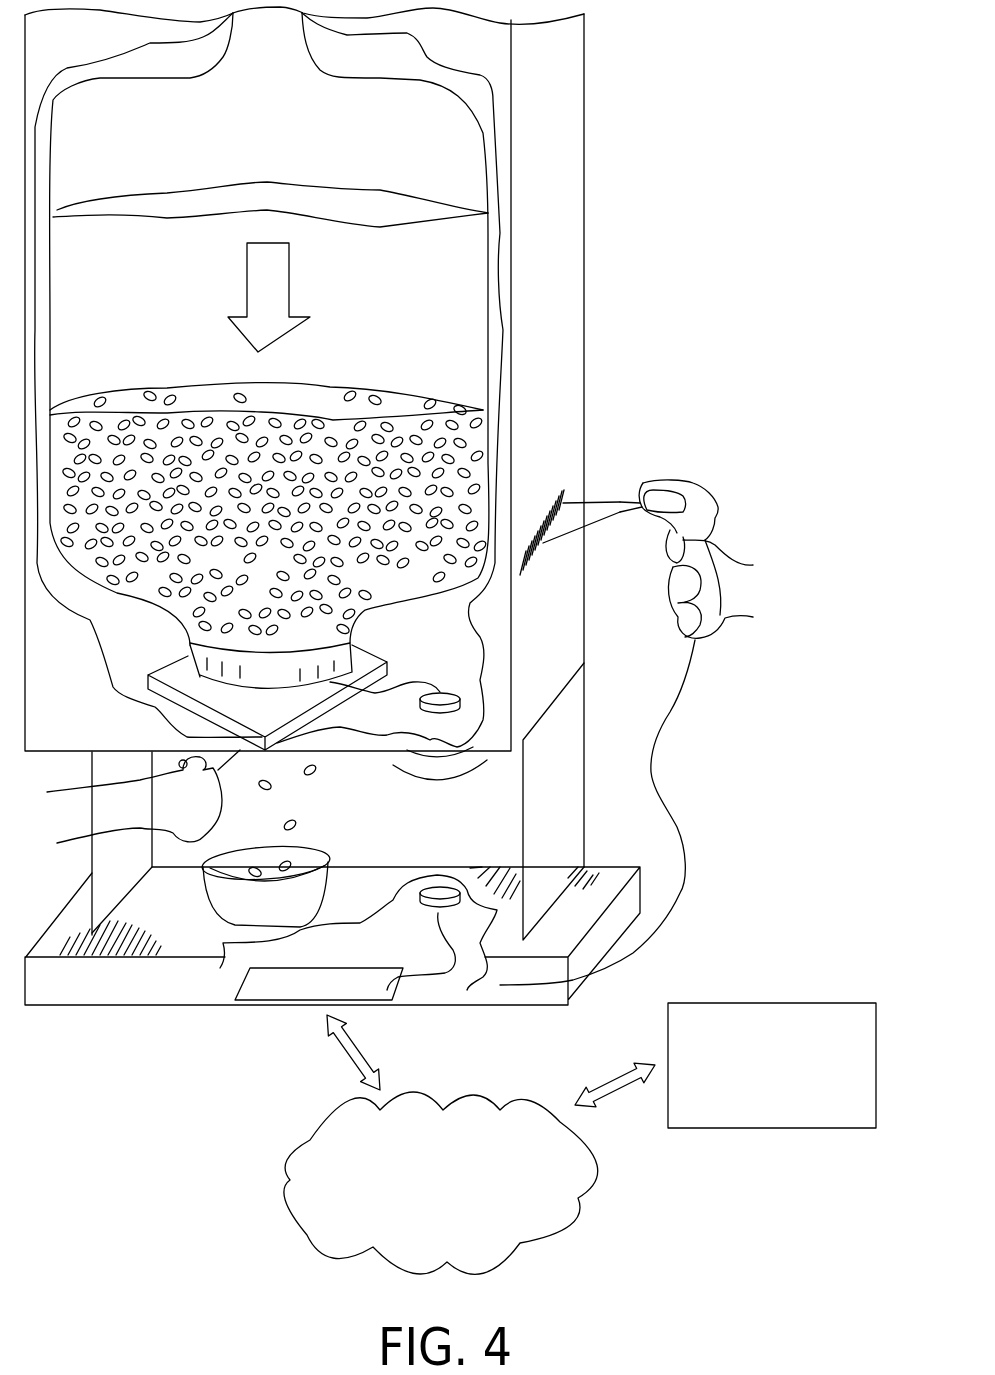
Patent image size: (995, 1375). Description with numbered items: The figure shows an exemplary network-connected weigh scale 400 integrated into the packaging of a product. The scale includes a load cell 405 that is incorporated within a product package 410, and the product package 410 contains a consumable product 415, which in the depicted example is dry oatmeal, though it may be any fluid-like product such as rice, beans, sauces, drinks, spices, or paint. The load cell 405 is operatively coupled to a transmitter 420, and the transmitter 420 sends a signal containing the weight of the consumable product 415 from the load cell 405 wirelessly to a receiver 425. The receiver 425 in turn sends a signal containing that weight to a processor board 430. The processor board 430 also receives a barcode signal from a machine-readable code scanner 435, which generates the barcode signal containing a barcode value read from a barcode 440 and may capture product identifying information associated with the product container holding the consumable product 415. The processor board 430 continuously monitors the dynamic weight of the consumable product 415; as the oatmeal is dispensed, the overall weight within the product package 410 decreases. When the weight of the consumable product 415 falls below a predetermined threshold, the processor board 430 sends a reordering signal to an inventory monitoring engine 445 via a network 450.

The network-connected weigh scale 400 is at (794, 58).
The load cell 405 is at (380, 653).
The product package 410 is at (584, 176).
The consumable product 415 is at (400, 398).
The transmitter 420 is at (462, 685).
The receiver 425 is at (420, 918).
The processor board 430 is at (268, 1000).
The machine-readable code scanner 435 is at (718, 510).
The barcode 440 is at (538, 480).
The inventory monitoring engine 445 is at (713, 1003).
The network 450 is at (446, 1204).